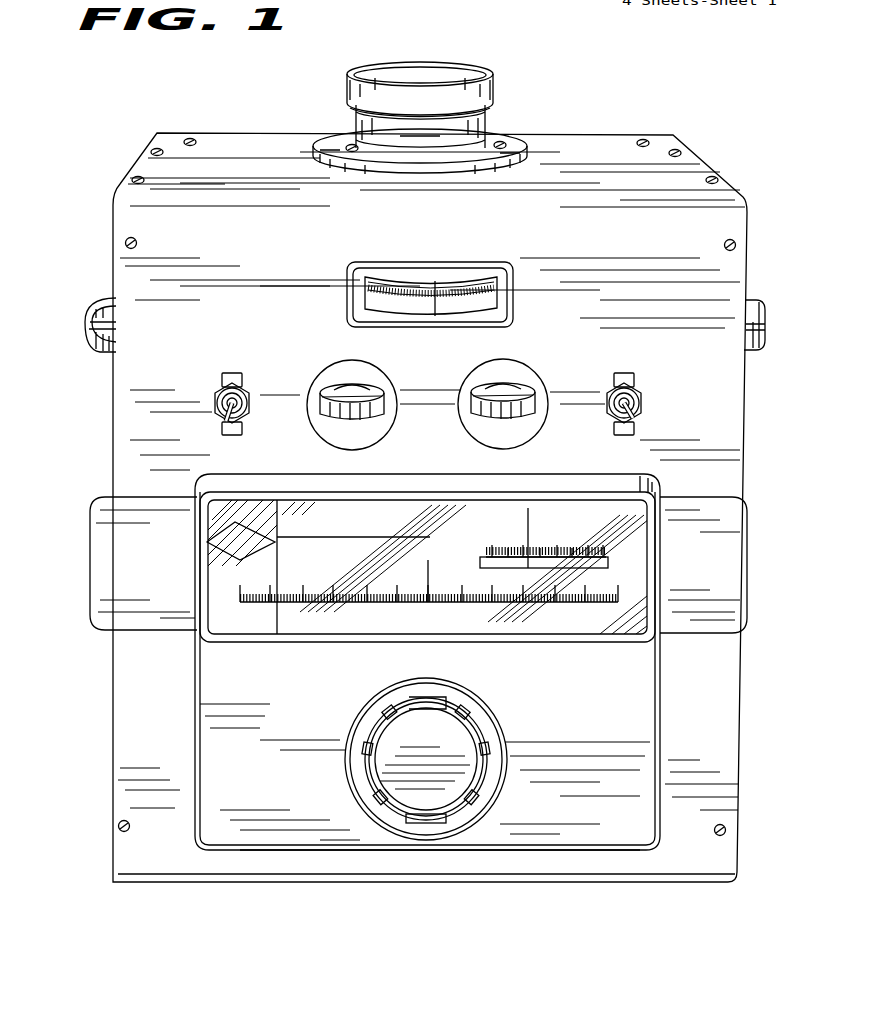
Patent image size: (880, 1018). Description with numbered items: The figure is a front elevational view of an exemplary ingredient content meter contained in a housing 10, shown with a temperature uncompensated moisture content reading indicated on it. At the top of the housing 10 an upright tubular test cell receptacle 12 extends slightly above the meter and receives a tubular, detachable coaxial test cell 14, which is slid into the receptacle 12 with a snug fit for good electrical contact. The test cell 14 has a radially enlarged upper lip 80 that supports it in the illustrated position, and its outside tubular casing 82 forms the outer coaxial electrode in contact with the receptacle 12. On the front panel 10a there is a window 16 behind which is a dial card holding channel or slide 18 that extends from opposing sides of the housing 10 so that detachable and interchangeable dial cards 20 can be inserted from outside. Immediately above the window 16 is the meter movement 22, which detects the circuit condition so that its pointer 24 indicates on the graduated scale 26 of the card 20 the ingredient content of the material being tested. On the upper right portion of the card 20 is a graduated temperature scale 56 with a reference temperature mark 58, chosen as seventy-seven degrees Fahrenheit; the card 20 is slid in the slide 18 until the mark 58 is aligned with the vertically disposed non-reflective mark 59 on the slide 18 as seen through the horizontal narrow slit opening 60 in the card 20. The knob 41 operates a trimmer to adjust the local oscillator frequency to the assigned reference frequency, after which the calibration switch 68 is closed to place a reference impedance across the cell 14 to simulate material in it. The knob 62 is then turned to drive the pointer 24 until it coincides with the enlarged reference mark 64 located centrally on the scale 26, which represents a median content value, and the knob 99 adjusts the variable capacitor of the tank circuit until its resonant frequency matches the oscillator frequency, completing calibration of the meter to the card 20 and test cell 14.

The housing 10 is at (695, 171).
The front panel 10a is at (628, 833).
The tubular test cell receptacle 12 is at (520, 138).
The test cell 14 is at (496, 110).
The window 16 is at (223, 642).
The dial card holding channel or slide 18 is at (187, 493).
The dial card 20 is at (92, 576).
The meter movement 22 is at (436, 286).
The pointer 24 is at (276, 613).
The graduated scale 26 is at (580, 612).
The knob 41 is at (328, 368).
The graduated temperature scale 56 is at (481, 546).
The reference temperature mark 58 is at (530, 512).
The non-reflective mark 59 is at (523, 562).
The slit opening 60 is at (607, 560).
The knob 62 is at (432, 815).
The enlarged reference mark 64 is at (440, 576).
The calibration switch 68 is at (640, 400).
The radially enlarged upper lip 80 is at (493, 100).
The outside tubular casing 82 is at (338, 140).
The knob 99 is at (546, 385).